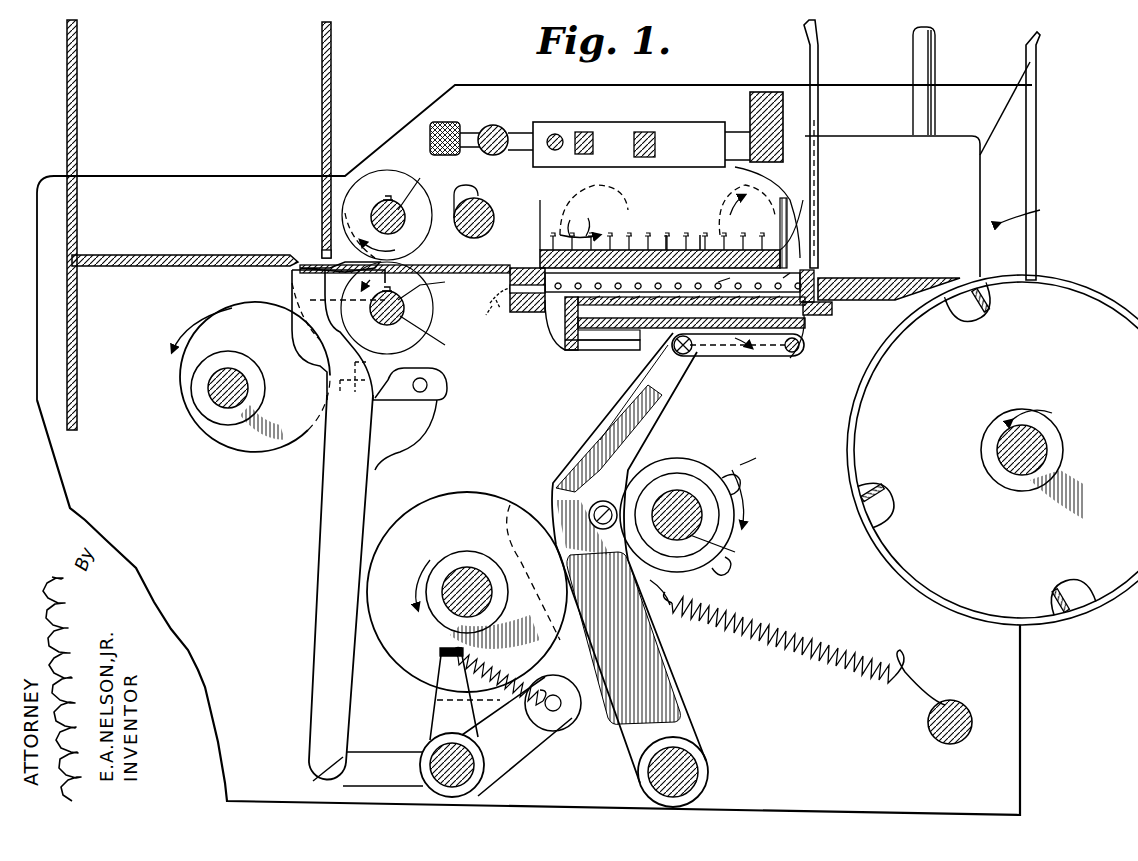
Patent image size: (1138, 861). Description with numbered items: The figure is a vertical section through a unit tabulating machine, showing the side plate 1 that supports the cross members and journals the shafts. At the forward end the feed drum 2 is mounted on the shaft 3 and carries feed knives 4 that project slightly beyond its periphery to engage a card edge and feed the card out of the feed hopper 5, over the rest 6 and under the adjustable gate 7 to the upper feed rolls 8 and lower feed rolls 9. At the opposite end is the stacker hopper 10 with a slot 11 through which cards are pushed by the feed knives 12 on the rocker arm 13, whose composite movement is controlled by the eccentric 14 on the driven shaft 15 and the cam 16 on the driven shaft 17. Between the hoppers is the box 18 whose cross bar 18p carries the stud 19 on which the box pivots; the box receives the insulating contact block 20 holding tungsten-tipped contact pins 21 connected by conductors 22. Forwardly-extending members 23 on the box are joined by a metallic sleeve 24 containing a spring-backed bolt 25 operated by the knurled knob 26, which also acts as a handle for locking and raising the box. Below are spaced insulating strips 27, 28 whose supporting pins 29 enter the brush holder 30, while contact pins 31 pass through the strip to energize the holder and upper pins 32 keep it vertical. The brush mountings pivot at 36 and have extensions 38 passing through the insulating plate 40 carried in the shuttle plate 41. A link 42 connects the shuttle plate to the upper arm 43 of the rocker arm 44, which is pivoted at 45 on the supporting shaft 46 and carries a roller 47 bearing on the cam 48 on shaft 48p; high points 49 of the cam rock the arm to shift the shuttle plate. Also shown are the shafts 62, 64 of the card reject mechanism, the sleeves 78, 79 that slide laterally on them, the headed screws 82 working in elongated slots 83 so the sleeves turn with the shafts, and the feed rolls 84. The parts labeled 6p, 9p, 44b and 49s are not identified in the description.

The side plate 1 is at (178, 197).
The feed drum 2 is at (1118, 306).
The shaft 3 is at (1012, 462).
The feed knives 4 is at (955, 318).
The feed hopper 5 is at (1030, 156).
The rest 6 is at (905, 278).
The wire 6' 6p is at (812, 210).
The adjustable gate 7 is at (820, 245).
The upper feed rolls 8 is at (632, 206).
The lower feed rolls 9 is at (553, 330).
The bracket end 9' 9p is at (812, 338).
The stacker hopper 10 is at (163, 243).
The slot 11 is at (312, 258).
The feed knives 12 is at (330, 250).
The rocker arm 13 is at (333, 522).
The eccentric 14 is at (270, 445).
The driven shaft 15 is at (220, 405).
The cam 16 is at (468, 505).
The driven shaft 17 is at (470, 578).
The box 18 is at (727, 207).
The cross bar 18p is at (748, 128).
The stud 19 is at (768, 100).
The contact block 20 is at (670, 238).
The contact pins 21 is at (704, 238).
The conductors 22 is at (657, 226).
The forwardly-extending member 23 is at (668, 130).
The metallic sleeve 24 is at (520, 133).
The spring-backed bolt 25 is at (488, 130).
The knurled knob 26 is at (448, 133).
The insulating strip 27 is at (522, 312).
The insulating strip 28 is at (832, 312).
The supporting pins 29 is at (776, 274).
The brush holder 30 is at (716, 276).
The contact pins 31 is at (488, 301).
The pins 32 is at (560, 280).
The pivot 36 is at (672, 285).
The extensions 38 is at (609, 336).
The plate 40 is at (633, 312).
The shuttle plate 41 is at (691, 332).
The link 42 is at (722, 356).
The upper arm 43 is at (670, 372).
The rocker arm 44 is at (552, 485).
The bell crank 44b is at (462, 722).
The pivot 45 is at (690, 745).
The supporting shaft 46 is at (690, 776).
The roller 47 is at (590, 516).
The cam 48 is at (693, 462).
The shaft 48p is at (726, 550).
The high points 49 is at (752, 462).
The spring and weight 49s is at (811, 662).
The shaft 62 is at (429, 314).
The shaft 64 is at (415, 183).
The sleeve 78 is at (470, 212).
The sleeve 79 is at (404, 306).
The headed screws 82 is at (390, 192).
The elongated slots 83 is at (345, 198).
The feed rolls 84 is at (352, 205).